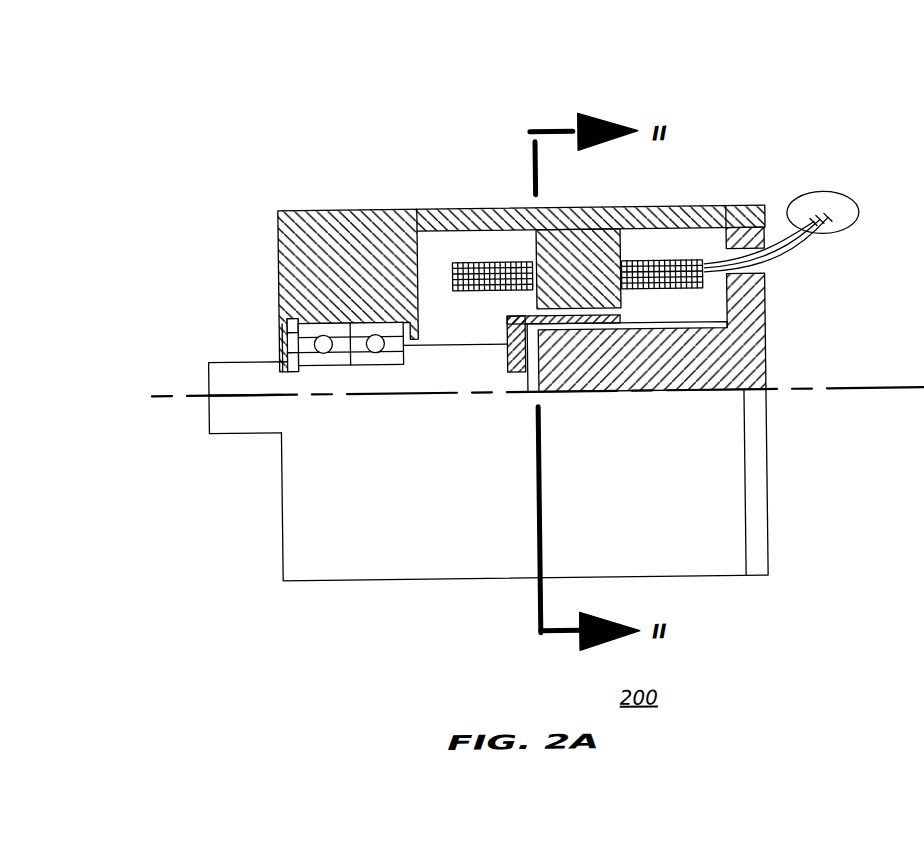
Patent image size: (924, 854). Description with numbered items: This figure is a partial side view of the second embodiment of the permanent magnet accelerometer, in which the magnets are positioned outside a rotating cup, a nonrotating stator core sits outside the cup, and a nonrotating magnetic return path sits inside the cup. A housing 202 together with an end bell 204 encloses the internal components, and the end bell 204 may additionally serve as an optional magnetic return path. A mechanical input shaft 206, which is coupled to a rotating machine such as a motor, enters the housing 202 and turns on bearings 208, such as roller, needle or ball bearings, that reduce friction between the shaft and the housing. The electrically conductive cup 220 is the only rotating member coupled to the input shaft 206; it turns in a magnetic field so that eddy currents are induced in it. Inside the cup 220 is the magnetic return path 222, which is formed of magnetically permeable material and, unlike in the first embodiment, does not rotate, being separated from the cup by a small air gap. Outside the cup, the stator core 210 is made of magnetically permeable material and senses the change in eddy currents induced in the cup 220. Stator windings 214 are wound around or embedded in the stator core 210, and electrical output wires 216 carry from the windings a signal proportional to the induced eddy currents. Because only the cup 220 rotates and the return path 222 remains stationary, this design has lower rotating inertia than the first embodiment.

The housing 202 is at (307, 209).
The end bell 204 is at (766, 571).
The mechanical input shaft 206 is at (208, 371).
The bearings 208 is at (345, 363).
The stator core 210 is at (587, 249).
The stator windings 214 is at (659, 270).
The electrical output wires 216 is at (830, 194).
The cup 220 is at (621, 318).
The magnetic return path 222 is at (750, 375).